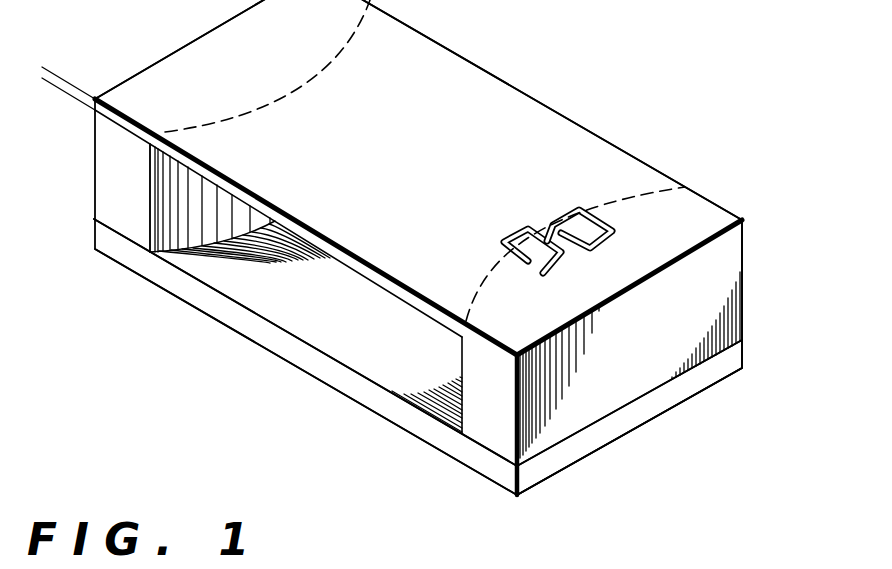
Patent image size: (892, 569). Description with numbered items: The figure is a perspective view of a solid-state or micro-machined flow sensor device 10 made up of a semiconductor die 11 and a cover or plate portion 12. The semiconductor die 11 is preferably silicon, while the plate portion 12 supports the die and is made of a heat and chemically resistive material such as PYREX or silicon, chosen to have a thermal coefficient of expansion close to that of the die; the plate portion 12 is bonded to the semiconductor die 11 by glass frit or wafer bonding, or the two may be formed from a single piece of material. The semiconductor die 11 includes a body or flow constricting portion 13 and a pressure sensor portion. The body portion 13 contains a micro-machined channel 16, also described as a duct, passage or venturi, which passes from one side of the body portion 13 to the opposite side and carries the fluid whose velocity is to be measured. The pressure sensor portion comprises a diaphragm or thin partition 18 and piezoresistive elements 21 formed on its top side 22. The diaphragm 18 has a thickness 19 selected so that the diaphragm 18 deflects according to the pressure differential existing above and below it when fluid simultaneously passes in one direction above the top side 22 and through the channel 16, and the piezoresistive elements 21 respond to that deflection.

The flow sensor device 10 is at (122, 423).
The semiconductor die 11 is at (712, 217).
The plate portion 12 is at (573, 451).
The body portion 13 is at (645, 372).
The channel 16 is at (294, 297).
The diaphragm 18 is at (374, 276).
The thickness 19 is at (58, 90).
The piezoresistive elements 21 is at (527, 223).
The top side 22 is at (488, 118).